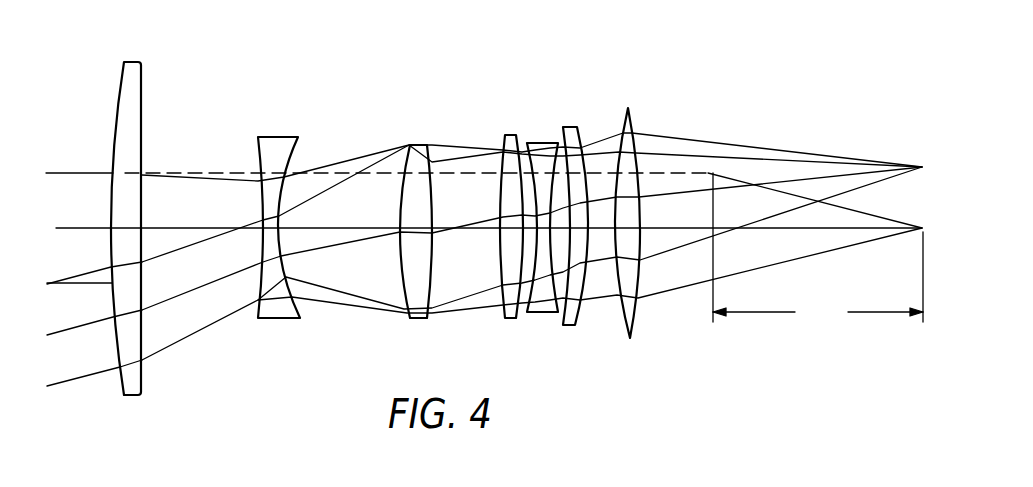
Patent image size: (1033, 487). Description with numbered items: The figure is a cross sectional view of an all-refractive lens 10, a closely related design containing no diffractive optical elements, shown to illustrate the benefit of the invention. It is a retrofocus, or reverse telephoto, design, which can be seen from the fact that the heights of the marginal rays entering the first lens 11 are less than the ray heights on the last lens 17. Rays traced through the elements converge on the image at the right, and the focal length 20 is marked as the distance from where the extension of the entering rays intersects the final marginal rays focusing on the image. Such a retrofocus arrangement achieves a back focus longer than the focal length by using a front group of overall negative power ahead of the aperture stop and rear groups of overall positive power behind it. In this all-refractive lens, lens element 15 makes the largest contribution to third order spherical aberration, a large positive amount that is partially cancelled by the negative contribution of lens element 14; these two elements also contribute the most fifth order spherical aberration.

The all-refractive lens 10 is at (702, 87).
The first lens 11 is at (130, 61).
The lens element 14 is at (510, 135).
The lens element 15 is at (543, 140).
The last lens 17 is at (627, 110).
The focal length 20 is at (818, 250).